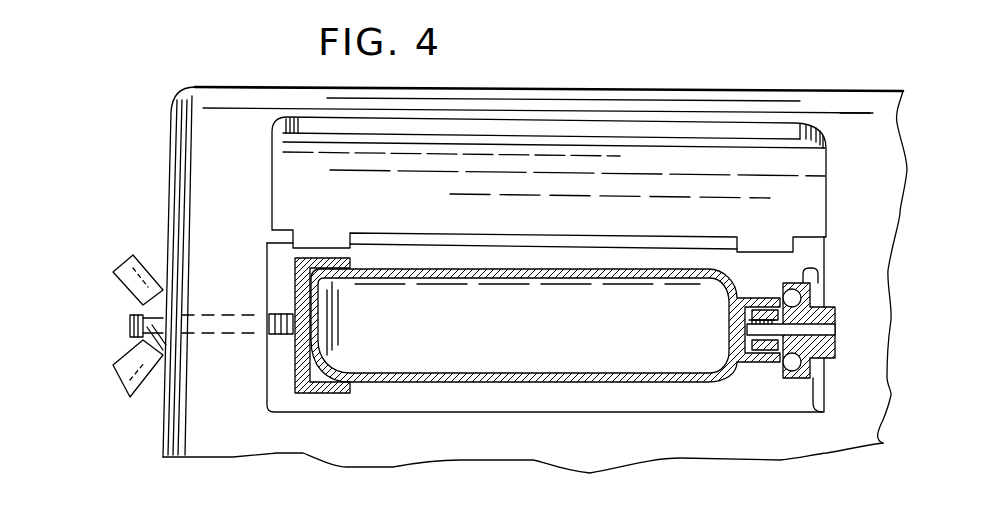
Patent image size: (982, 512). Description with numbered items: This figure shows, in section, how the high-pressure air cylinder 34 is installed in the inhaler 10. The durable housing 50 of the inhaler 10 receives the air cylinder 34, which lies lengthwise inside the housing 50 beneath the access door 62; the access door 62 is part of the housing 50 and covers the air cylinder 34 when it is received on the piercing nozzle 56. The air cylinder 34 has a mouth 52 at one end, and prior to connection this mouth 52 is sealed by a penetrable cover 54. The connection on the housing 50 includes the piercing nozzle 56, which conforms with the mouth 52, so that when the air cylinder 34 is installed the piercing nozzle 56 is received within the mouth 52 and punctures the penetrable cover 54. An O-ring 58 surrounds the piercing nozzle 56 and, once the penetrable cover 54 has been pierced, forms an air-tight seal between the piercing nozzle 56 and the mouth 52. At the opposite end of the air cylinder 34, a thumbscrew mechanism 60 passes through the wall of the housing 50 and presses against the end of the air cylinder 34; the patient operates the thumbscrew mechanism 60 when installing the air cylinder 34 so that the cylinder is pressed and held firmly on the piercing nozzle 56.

The inhaler 10 is at (206, 62).
The air cylinder 34 is at (442, 383).
The housing 50 is at (607, 453).
The mouth 52 is at (750, 296).
The penetrable cover 54 is at (753, 350).
The piercing nozzle 56 is at (812, 270).
The O-ring 58 is at (770, 363).
The thumbscrew mechanism 60 is at (123, 266).
The access door 62 is at (477, 180).